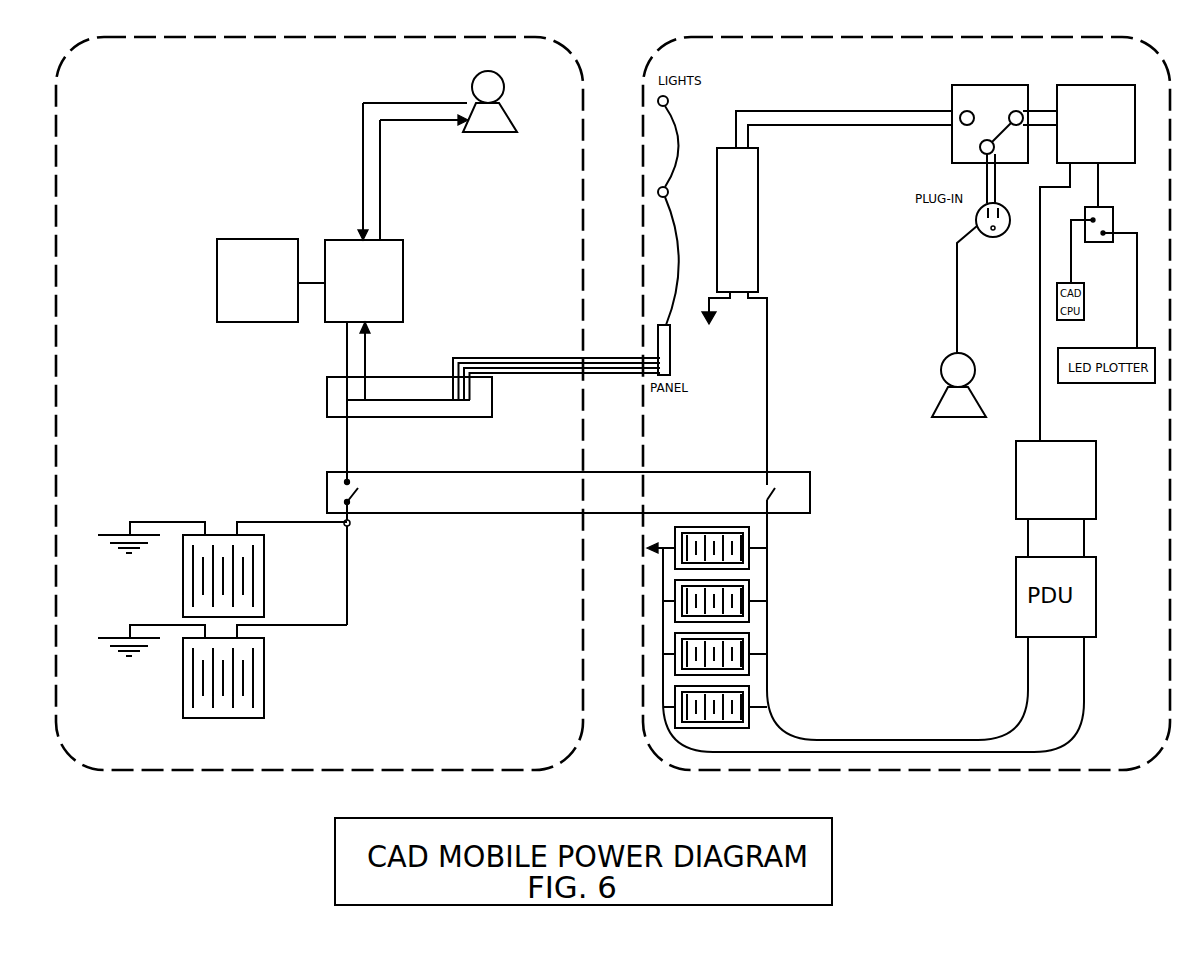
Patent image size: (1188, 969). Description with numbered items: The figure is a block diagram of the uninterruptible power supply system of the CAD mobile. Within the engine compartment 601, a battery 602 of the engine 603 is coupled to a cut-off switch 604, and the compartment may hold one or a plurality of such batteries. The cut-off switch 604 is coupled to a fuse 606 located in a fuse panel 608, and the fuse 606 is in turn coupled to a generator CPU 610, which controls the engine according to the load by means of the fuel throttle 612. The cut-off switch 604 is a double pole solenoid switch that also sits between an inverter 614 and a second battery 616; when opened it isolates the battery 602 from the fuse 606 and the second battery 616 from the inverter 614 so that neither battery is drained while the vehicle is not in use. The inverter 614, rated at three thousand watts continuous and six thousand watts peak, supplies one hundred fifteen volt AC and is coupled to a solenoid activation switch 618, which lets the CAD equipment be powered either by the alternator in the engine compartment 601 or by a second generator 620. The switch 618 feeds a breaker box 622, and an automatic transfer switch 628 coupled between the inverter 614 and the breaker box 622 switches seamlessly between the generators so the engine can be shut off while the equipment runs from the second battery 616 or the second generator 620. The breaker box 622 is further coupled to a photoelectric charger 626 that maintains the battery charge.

The engine compartment 601 is at (319, 403).
The battery 602 is at (222, 588).
The engine 603 is at (458, 155).
The cut-off switch 604 is at (568, 548).
The fuse 606 is at (327, 390).
The fuse panel 608 is at (327, 393).
The generator CPU 610 is at (364, 281).
The fuel throttle 612 is at (238, 280).
The inverter 614 is at (827, 283).
The second battery 616 is at (755, 627).
The solenoid activation switch 618 is at (735, 483).
The second generator 620 is at (936, 321).
The breaker box 622 is at (1088, 254).
The photoelectric charger 626 is at (1029, 499).
The automatic transfer switch 628 is at (977, 115).